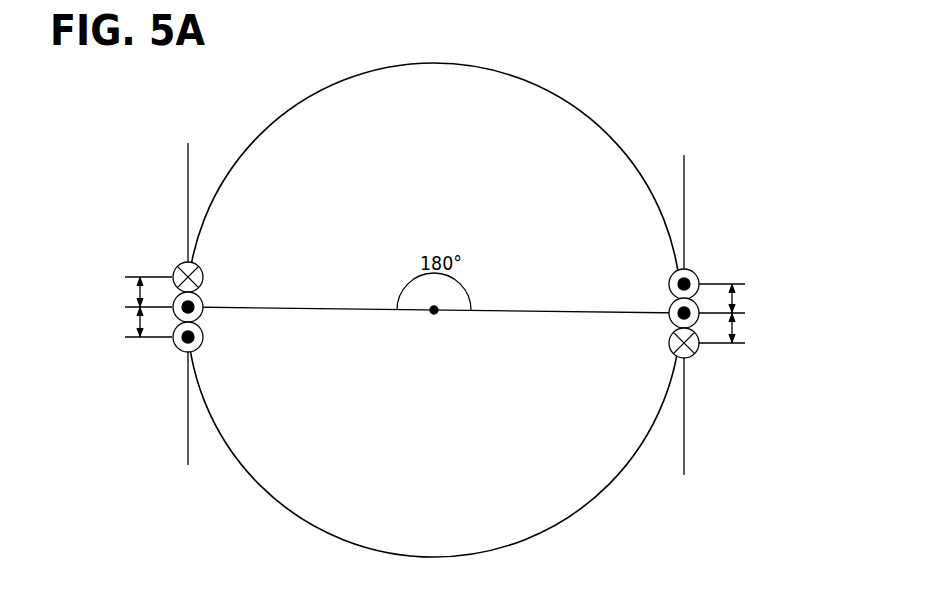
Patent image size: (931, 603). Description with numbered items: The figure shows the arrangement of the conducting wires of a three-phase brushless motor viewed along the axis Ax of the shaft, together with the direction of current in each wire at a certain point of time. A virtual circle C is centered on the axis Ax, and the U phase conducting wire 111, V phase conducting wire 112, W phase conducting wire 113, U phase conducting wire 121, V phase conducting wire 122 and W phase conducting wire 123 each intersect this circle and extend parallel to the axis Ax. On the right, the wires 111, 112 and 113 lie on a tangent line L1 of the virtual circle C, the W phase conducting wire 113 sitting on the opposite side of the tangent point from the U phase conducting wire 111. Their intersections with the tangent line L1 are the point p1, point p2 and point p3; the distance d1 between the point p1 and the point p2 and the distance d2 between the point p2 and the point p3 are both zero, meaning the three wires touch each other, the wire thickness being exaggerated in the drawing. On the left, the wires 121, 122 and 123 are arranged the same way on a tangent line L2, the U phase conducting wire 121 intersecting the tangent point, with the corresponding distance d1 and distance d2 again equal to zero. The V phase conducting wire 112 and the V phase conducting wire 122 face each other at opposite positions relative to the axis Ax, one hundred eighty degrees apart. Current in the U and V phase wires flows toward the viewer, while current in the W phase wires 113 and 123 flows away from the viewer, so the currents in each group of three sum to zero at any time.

The virtual circle C is at (568, 95).
The axis Ax is at (435, 316).
The tangent line L1 is at (684, 185).
The tangent line L2 is at (188, 168).
The U phase conducting wire 111 is at (672, 274).
The V phase conducting wire 112 is at (672, 305).
The W phase conducting wire 113 is at (674, 350).
The U phase conducting wire 121 is at (198, 346).
The V phase conducting wire 122 is at (201, 300).
The W phase conducting wire 123 is at (199, 268).
The point p1 is at (184, 351).
The point p2 is at (200, 311).
The point p3 is at (184, 263).
The distance d1 is at (137, 322).
The distance d2 is at (137, 290).